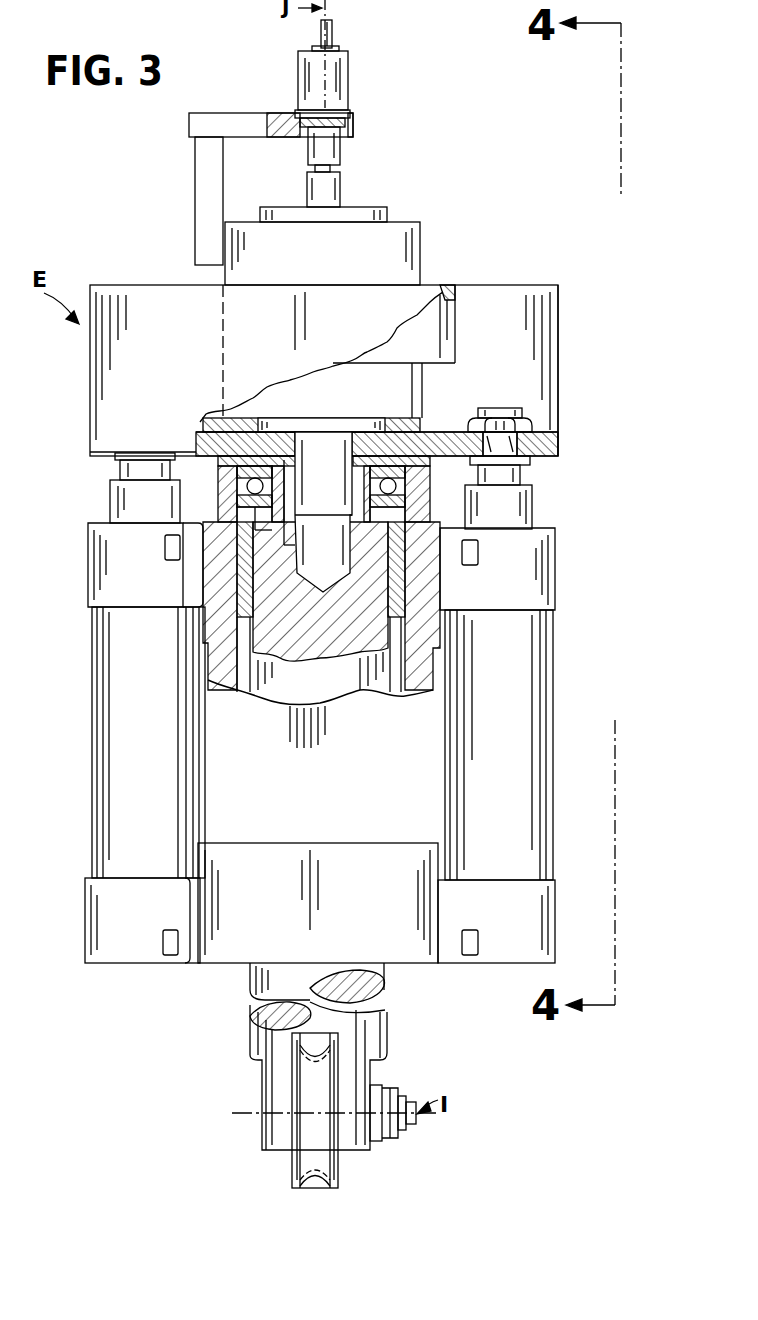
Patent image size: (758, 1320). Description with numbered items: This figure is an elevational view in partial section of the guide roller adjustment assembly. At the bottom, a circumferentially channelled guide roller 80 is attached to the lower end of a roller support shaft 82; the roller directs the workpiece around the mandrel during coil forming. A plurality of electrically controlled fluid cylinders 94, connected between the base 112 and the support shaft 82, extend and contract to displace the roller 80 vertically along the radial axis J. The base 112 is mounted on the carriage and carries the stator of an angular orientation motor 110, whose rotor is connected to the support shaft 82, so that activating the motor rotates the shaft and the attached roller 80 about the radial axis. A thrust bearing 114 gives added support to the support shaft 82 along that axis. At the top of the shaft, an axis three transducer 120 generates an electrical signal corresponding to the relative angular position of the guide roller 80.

The axis 3 transducer 120 is at (350, 76).
The base 112 is at (559, 375).
The angular orientation motor 110 is at (421, 400).
The thrust bearing 114 is at (395, 488).
The fluid cylinders 94 is at (91, 728).
The roller support shaft 82 is at (250, 983).
The guide roller 80 is at (336, 1163).